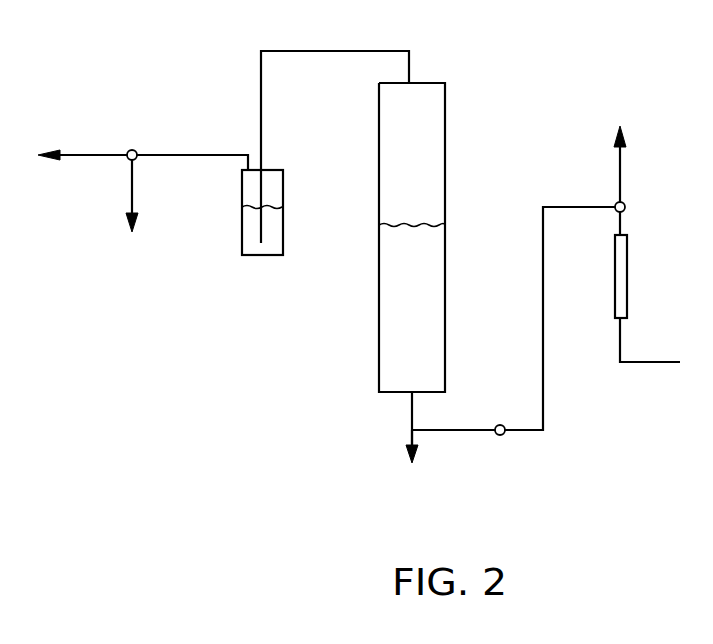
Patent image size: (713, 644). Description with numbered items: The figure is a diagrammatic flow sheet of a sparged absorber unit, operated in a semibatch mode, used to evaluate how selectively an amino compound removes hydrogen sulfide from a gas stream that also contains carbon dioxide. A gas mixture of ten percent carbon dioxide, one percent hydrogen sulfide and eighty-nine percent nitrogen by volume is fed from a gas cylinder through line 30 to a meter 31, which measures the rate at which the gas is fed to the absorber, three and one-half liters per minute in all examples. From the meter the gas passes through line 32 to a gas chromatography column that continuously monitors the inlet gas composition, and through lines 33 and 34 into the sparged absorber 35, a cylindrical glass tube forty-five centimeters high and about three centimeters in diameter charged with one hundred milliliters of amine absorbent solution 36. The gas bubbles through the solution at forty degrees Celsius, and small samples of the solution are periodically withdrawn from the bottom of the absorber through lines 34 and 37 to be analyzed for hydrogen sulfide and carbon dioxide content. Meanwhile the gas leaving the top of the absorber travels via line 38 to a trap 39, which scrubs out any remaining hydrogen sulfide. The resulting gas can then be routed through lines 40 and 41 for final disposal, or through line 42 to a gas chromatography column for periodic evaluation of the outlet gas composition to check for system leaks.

The line 30 is at (643, 362).
The meter 31 is at (627, 278).
The line 32 is at (622, 172).
The line 33 is at (545, 383).
The line 34 is at (412, 412).
The sparged absorber 35 is at (445, 157).
The amine absorbent solution 36 is at (447, 303).
The line 37 is at (410, 443).
The line 38 is at (349, 51).
The trap 39 is at (283, 207).
The line 40 is at (157, 153).
The line 41 is at (133, 188).
The line 42 is at (90, 152).